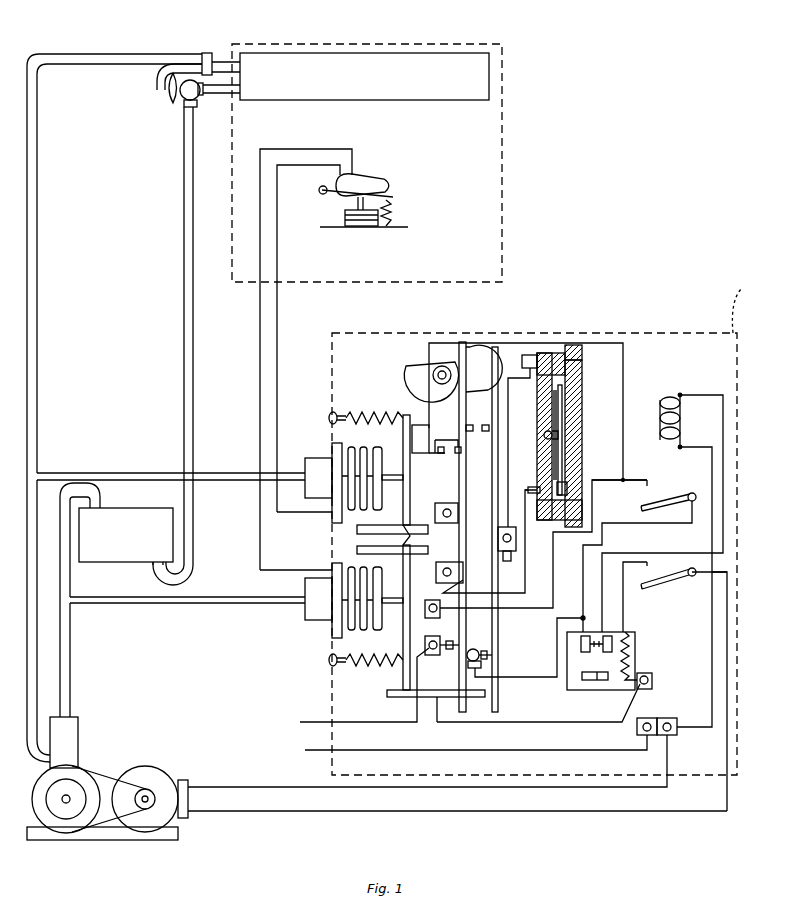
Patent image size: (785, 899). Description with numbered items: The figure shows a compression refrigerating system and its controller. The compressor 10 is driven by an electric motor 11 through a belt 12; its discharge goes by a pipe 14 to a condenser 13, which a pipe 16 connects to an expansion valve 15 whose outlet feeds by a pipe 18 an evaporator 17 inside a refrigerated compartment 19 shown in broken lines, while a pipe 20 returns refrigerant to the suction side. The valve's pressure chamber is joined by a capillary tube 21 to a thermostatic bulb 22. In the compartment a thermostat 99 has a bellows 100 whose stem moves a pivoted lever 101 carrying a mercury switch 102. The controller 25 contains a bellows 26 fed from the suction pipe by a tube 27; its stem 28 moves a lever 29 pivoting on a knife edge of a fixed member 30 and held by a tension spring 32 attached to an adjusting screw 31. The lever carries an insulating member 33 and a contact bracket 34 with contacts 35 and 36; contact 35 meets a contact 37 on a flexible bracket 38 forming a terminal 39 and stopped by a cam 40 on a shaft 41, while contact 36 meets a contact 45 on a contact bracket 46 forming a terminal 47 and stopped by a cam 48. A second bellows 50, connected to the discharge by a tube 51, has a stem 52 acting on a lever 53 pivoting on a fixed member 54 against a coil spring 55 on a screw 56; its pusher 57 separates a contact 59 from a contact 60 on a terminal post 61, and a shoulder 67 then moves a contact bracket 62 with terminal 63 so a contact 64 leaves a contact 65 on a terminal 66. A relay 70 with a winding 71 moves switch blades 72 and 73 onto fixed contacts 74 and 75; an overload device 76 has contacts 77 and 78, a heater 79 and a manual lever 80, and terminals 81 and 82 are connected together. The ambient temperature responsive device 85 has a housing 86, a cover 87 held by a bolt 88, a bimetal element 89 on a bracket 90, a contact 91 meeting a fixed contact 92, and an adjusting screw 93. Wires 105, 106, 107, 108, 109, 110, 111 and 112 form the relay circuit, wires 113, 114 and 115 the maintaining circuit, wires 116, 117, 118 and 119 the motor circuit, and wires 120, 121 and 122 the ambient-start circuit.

The compressor 10 is at (102, 739).
The electric motor 11 is at (160, 771).
The belt 12 is at (110, 771).
The condenser 13 is at (117, 536).
The pipe 14 is at (72, 642).
The expansion valve 15 is at (161, 108).
The pipe 16 is at (194, 340).
The evaporator 17 is at (357, 77).
The pipe 18 is at (220, 95).
The compartment 19 is at (503, 173).
The pipe 20 is at (32, 330).
The capillary tube 21 is at (162, 87).
The thermostatic bulb 22 is at (208, 57).
The controller 25 is at (640, 330).
The bellows 26 is at (352, 455).
The tube 27 is at (221, 472).
The stem 28 is at (388, 473).
The lever 29 is at (410, 487).
The fixed member 30 is at (426, 530).
The adjusting screw 31 is at (336, 412).
The tension spring 32 is at (372, 412).
The insulating member 33 is at (418, 455).
The contact bracket 34 is at (427, 430).
The electrical contact 35 is at (441, 455).
The electrical contact 36 is at (470, 425).
The contact 37 is at (454, 450).
The flexible bracket 38 is at (468, 505).
The electrical terminal 39 is at (447, 508).
The cam 40 is at (406, 370).
The shaft 41 is at (442, 368).
The contact 45 is at (486, 432).
The contact bracket 46 is at (491, 515).
The electrical terminal 47 is at (507, 561).
The cam 48 is at (480, 346).
The bellows 50 is at (357, 628).
The tube 51 is at (220, 604).
The stem 52 is at (395, 597).
The lever 53 is at (403, 635).
The fixed member 54 is at (390, 549).
The coil spring 55 is at (370, 666).
The screw 56 is at (338, 668).
The pusher 57 is at (390, 698).
The contact 59 is at (489, 651).
The contact 60 is at (473, 649).
The electrical terminal post 61 is at (482, 664).
The contact bracket 62 is at (464, 576).
The electrical terminal 63 is at (450, 568).
The contact 64 is at (436, 648).
The contact 65 is at (448, 641).
The electrical terminal 66 is at (430, 637).
The shoulder 67 is at (438, 715).
The relay 70 is at (695, 431).
The winding 71 is at (660, 415).
The switch blade 72 is at (692, 493).
The switch blade 73 is at (692, 570).
The fixed electrical contact 74 is at (655, 492).
The fixed electrical contact 75 is at (650, 583).
The overload device 76 is at (650, 650).
The contact 77 is at (585, 652).
The contact 78 is at (607, 652).
The electric heater 79 is at (631, 660).
The manual lever 80 is at (596, 681).
The terminal 81 is at (647, 718).
The terminal 82 is at (667, 718).
The temperature responsive device 85 is at (593, 395).
The housing 86 is at (517, 536).
The cover 87 is at (564, 460).
The bolt 88 is at (583, 353).
The bimetal temperature responsive element 89 is at (558, 448).
The bracket 90 is at (534, 378).
The electrical contact 91 is at (566, 485).
The fixed contact 92 is at (540, 466).
The screw 93 is at (544, 436).
The thermostat 99 is at (409, 214).
The bellows 100 is at (345, 219).
The pivoted lever 101 is at (320, 194).
The mercury switch 102 is at (366, 176).
The wire 105 is at (304, 722).
The wire 106 is at (275, 378).
The wire 107 is at (263, 345).
The wire 108 is at (530, 675).
The wire 109 is at (584, 616).
The wire 110 is at (620, 553).
The wire 111 is at (712, 673).
The wire 112 is at (304, 750).
The wire 113 is at (526, 340).
The wire 114 is at (628, 480).
The wire 115 is at (583, 570).
The wire 116 is at (541, 721).
The wire 117 is at (624, 605).
The wire 118 is at (660, 811).
The wire 119 is at (668, 787).
The wire 120 is at (530, 606).
The wire 121 is at (525, 585).
The wire 122 is at (530, 489).